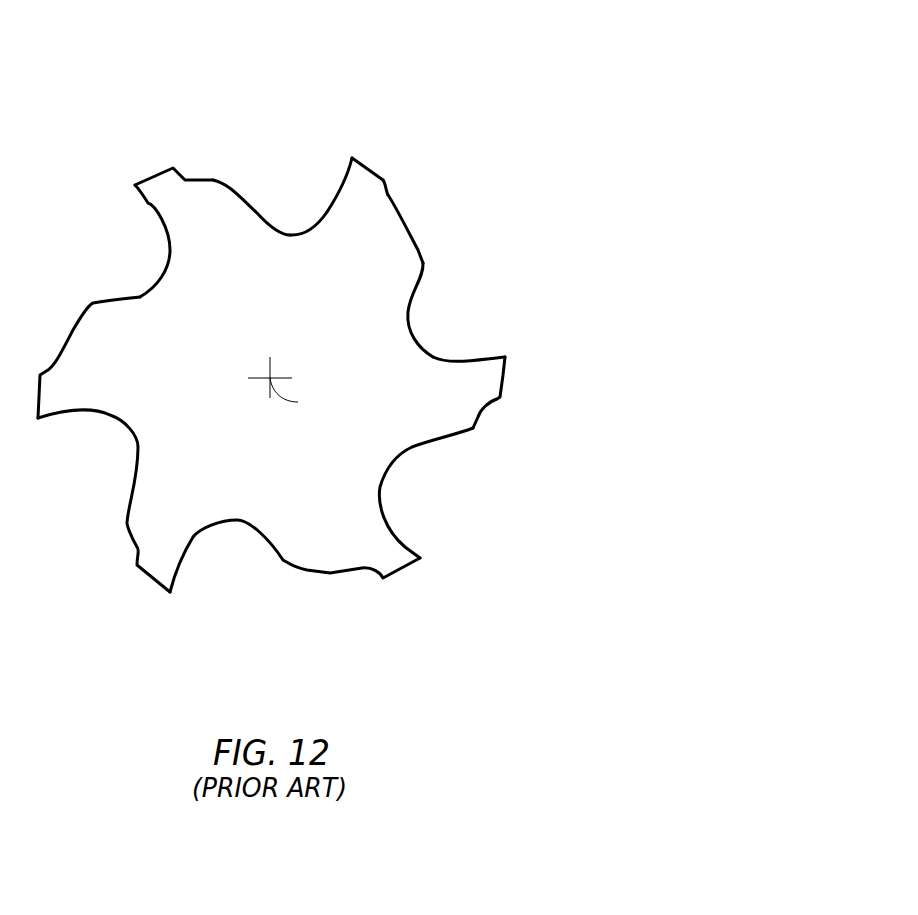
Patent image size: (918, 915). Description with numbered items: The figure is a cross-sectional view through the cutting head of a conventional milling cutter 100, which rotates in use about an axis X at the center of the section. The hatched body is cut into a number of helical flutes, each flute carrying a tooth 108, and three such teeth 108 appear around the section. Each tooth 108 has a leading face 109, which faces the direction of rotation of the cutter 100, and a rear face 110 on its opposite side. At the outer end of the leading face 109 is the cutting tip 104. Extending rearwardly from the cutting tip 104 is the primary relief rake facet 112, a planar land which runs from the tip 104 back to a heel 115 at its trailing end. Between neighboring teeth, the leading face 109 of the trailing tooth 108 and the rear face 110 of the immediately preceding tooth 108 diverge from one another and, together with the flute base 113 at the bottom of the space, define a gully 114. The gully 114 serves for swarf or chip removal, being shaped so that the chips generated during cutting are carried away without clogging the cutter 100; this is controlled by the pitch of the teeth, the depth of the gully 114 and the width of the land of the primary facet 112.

The milling cutter 100 is at (550, 55).
The cutting tip 104 is at (135, 183).
The tooth 108 is at (216, 238).
The leading face 109 is at (148, 203).
The rear face 110 is at (240, 195).
The primary relief rake facet 112 is at (158, 172).
The flute base 113 is at (297, 232).
The gully 114 is at (273, 197).
The heel 115 is at (388, 192).